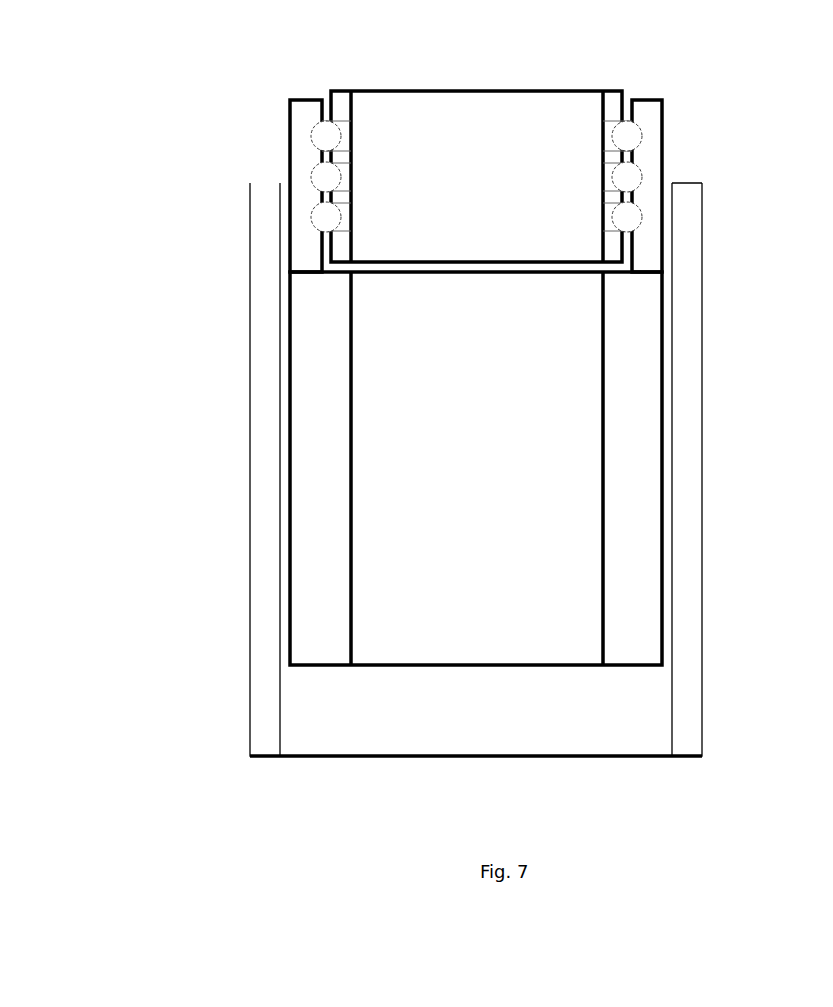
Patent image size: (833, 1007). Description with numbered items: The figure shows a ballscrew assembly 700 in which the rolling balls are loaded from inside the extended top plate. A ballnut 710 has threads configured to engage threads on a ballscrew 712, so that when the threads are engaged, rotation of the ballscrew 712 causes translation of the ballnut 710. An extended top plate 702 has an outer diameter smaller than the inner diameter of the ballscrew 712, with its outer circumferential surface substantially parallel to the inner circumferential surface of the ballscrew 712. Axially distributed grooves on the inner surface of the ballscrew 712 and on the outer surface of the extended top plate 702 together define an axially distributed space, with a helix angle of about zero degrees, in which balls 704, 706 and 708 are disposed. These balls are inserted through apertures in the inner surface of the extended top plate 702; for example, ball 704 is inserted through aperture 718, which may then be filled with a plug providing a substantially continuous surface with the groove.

The ballscrew assembly 700 is at (208, 115).
The extended top plate 702 is at (558, 88).
The ball 704 is at (627, 135).
The ball 706 is at (633, 177).
The ball 708 is at (632, 217).
The ballnut 710 is at (692, 325).
The ballscrew 712 is at (638, 432).
The aperture 718 is at (345, 135).